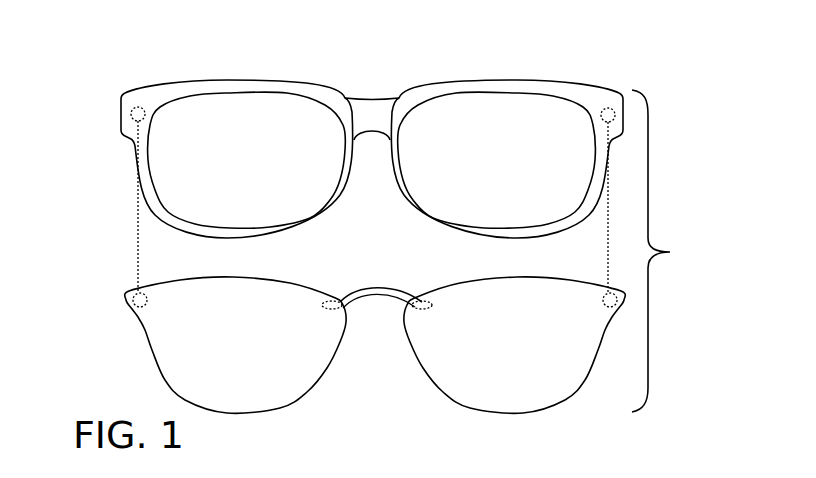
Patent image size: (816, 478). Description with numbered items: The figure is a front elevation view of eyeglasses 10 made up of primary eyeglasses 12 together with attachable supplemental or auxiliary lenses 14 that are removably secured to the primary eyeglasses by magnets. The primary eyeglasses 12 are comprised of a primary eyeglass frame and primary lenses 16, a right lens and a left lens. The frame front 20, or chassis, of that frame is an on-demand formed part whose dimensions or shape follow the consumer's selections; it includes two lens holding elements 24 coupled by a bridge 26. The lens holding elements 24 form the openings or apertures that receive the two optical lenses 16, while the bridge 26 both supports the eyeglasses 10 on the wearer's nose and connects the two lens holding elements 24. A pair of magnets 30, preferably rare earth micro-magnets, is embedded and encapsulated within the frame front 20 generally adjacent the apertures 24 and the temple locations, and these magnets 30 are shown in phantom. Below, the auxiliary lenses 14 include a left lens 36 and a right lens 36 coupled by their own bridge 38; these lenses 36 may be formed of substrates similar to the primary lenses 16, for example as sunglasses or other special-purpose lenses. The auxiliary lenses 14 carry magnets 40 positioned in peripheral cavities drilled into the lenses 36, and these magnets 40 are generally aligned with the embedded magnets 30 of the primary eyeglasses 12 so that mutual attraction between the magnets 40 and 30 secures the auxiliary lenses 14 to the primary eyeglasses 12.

The eyeglasses 10 is at (670, 252).
The primary eyeglasses 12 is at (116, 206).
The attachable supplemental or auxiliary lenses 14 is at (131, 362).
The primary lenses 16 is at (372, 122).
The frame front 20 is at (298, 82).
The lens holding elements 24 is at (227, 94).
The bridge 26 is at (373, 123).
The magnets 30 is at (131, 117).
The auxiliary lenses 36 is at (255, 354).
The bridge 38 is at (372, 287).
The magnets 40 is at (133, 300).